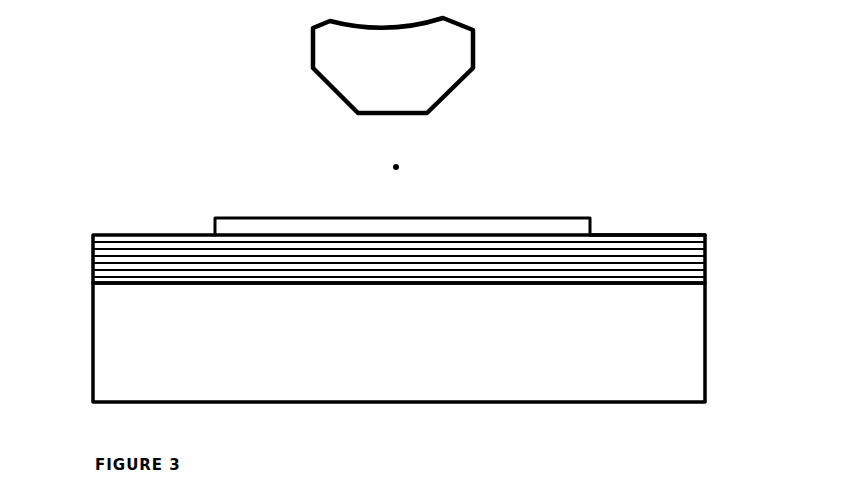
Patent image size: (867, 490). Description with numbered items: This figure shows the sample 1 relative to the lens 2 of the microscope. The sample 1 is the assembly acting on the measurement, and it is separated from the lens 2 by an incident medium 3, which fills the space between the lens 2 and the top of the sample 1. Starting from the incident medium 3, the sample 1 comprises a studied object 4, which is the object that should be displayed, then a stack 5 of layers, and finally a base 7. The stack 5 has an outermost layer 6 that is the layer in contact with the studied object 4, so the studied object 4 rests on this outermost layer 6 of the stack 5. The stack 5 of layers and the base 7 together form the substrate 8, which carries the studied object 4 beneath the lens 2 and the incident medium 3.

The sample 1 is at (430, 274).
The lens 2 is at (455, 54).
The incident medium 3 is at (396, 167).
The studied object 4 is at (215, 232).
The stack of layers 5 is at (92, 252).
The outermost layer 6 is at (659, 191).
The base 7 is at (93, 373).
The substrate 8 is at (406, 272).